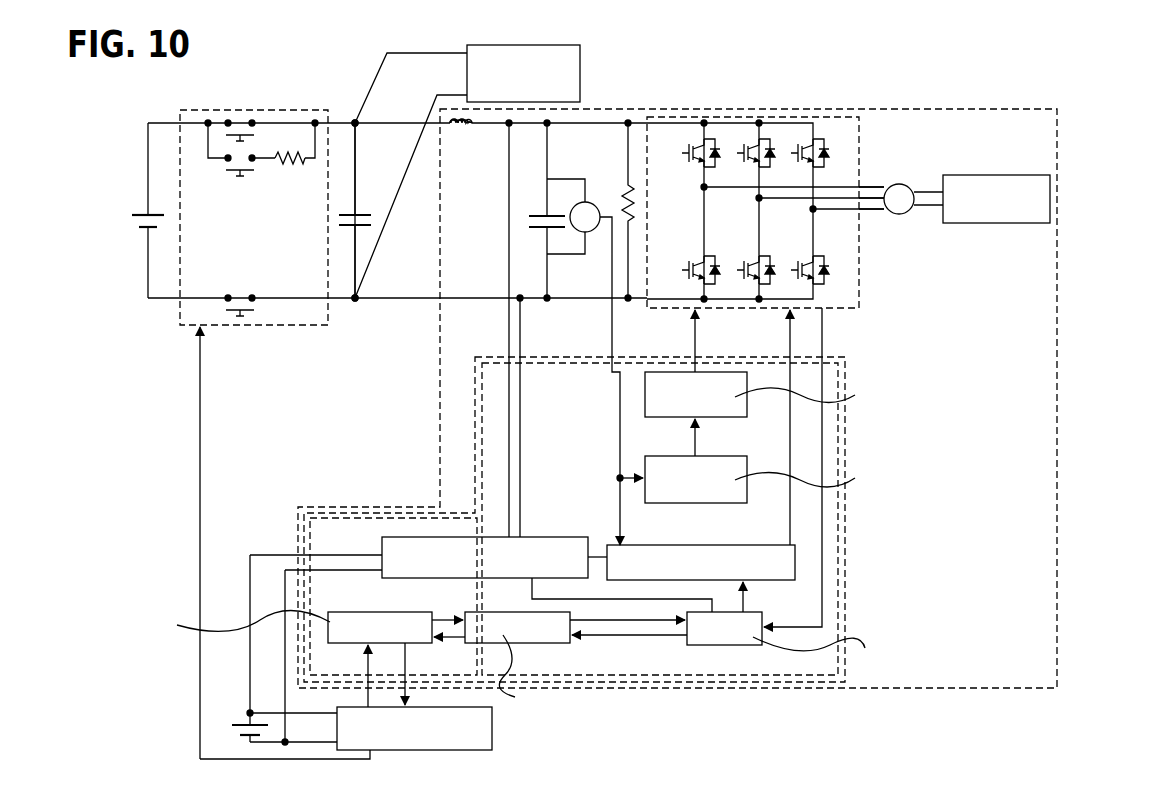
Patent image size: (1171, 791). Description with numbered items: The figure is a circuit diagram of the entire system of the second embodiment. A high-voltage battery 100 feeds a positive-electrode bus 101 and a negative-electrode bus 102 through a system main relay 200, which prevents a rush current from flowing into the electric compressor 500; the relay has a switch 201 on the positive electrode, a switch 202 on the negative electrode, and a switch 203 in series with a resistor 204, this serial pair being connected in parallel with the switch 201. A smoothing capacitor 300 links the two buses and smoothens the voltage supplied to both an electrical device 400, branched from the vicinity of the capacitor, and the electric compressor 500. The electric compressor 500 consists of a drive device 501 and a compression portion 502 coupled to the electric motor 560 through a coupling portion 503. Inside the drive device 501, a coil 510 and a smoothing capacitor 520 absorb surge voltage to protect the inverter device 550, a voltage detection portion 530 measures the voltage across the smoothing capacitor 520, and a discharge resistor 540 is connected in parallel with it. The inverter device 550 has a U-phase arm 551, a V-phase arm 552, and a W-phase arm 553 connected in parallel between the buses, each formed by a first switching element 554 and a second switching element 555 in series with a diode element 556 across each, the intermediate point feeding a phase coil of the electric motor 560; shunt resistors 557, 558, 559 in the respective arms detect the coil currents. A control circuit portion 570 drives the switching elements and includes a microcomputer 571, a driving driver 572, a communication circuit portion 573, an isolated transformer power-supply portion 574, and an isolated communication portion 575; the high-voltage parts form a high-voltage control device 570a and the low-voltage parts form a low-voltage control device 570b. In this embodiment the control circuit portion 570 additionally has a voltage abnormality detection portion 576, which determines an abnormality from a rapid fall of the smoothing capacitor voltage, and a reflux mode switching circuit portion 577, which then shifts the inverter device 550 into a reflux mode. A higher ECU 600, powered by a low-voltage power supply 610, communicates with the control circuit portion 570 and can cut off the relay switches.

The high-voltage battery 100 is at (142, 212).
The positive-electrode bus 101 is at (352, 120).
The negative-electrode bus 102 is at (342, 302).
The system main relay 200 is at (282, 108).
The switch 201 is at (218, 133).
The switch 202 is at (240, 318).
The switch 203 is at (232, 176).
The resistor 204 is at (290, 166).
The smoothing capacitor 300 is at (362, 206).
The electrical device 400 is at (581, 52).
The electric compressor 500 is at (1060, 342).
The drive device 501 is at (880, 344).
The compression portion 502 is at (975, 175).
The coupling portion 503 is at (938, 214).
The coil 510 is at (465, 128).
The smoothing capacitor 520 is at (537, 232).
The voltage detection portion 530 is at (603, 232).
The discharge resistor 540 is at (624, 196).
The inverter device 550 is at (862, 153).
The U-phase arm 551 is at (696, 190).
The V-phase arm 552 is at (750, 200).
The W-phase arm 553 is at (805, 211).
The first switching element 554 is at (690, 150).
The second switching element 555 is at (688, 274).
The diode element 556 is at (829, 157).
The shunt resistor 557 is at (706, 286).
The shunt resistor 558 is at (752, 287).
The shunt resistor 559 is at (816, 292).
The electric motor 560 is at (906, 186).
The control circuit portion 570 is at (846, 563).
The high-voltage control device 570a is at (556, 358).
The low-voltage control device 570b is at (400, 518).
The microcomputer 571 is at (715, 645).
The driving driver 572 is at (796, 560).
The communication circuit portion 573 is at (385, 612).
The isolated transformer power-supply portion 574 is at (465, 578).
The isolated communication portion 575 is at (523, 645).
The voltage abnormality detection portion 576 is at (672, 503).
The reflux mode switching circuit portion 577 is at (672, 417).
The higher ECU 600 is at (494, 731).
The low-voltage power supply 610 is at (246, 713).